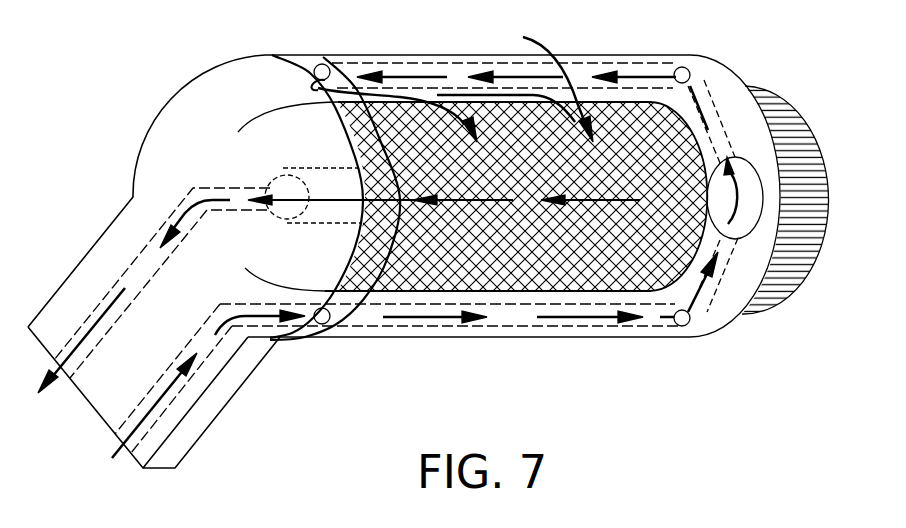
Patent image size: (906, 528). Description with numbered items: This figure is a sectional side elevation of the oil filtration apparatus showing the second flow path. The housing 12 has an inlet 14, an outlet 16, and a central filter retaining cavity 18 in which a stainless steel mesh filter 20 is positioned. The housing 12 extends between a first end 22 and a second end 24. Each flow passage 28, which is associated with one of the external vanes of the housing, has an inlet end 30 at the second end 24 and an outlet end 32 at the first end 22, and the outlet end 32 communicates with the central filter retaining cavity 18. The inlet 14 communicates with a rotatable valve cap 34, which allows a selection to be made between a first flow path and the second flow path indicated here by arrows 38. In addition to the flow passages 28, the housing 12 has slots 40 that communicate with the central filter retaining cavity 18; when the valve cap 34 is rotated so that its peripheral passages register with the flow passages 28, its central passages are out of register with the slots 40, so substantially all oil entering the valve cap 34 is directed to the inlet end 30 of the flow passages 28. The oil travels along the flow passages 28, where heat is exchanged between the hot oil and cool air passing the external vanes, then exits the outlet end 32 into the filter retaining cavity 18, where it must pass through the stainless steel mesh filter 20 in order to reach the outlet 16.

The housing 12 is at (203, 66).
The inlet 14 is at (217, 345).
The outlet 16 is at (137, 258).
The central filter retaining cavity 18 is at (688, 270).
The stainless steel mesh filter 20 is at (497, 265).
The first end 22 is at (172, 132).
The second end 24 is at (718, 330).
The flow passage 28 is at (468, 64).
The inlet end 30 is at (665, 70).
The outlet end 32 is at (325, 64).
The rotatable valve cap 34 is at (790, 117).
The arrows 38 is at (543, 75).
The slots 40 is at (710, 110).